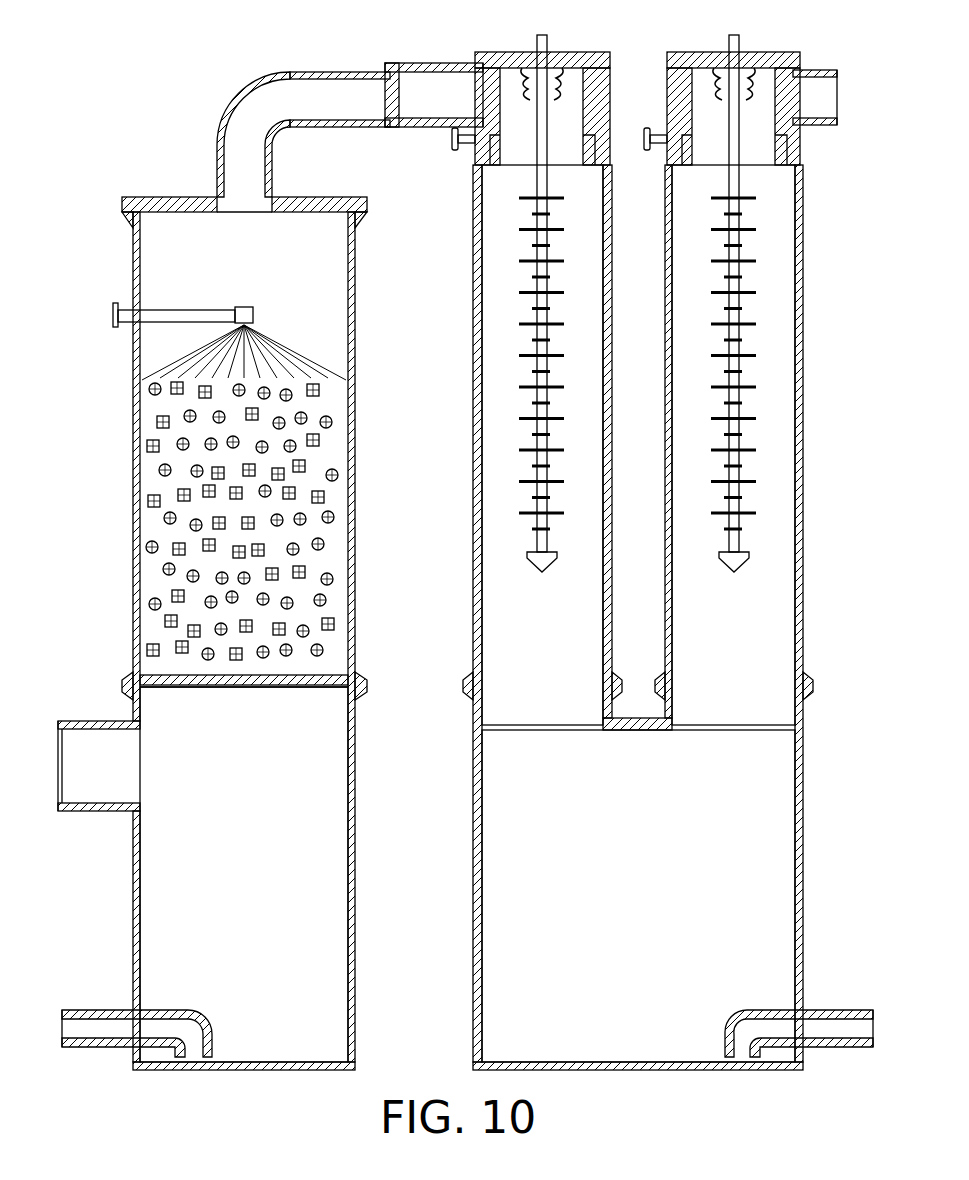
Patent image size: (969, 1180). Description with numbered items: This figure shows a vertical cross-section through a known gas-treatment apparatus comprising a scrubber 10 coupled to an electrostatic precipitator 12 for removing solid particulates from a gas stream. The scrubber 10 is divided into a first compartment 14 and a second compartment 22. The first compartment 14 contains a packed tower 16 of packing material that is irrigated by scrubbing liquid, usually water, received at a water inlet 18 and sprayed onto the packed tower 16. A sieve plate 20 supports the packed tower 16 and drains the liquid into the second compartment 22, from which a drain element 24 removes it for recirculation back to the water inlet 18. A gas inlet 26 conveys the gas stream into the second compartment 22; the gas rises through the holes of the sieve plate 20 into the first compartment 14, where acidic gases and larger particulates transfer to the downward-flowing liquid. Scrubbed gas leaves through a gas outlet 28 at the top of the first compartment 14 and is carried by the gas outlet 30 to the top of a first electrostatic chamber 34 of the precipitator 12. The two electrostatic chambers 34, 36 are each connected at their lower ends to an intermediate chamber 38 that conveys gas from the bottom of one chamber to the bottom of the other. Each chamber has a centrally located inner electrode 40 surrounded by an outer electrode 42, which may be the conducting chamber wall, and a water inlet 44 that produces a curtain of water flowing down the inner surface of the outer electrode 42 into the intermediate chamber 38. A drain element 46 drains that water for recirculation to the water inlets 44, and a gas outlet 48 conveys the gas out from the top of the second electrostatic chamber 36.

The scrubber 10 is at (95, 516).
The electrostatic precipitator 12 is at (822, 318).
The first compartment 14 is at (133, 425).
The packed tower 16 is at (322, 508).
The water inlet 18 is at (113, 316).
The sieve plate 20 is at (305, 688).
The second compartment 22 is at (357, 820).
The drain element 24 is at (92, 1010).
The gas inlet 26 is at (90, 812).
The gas outlet 28 is at (217, 152).
The gas outlet 30 is at (455, 60).
The electrostatic chamber 34 is at (542, 445).
The electrostatic chamber 36 is at (733, 445).
The intermediate chamber 38 is at (638, 896).
The inner electrode 40 is at (537, 462).
The outer electrode 42 is at (482, 512).
The water inlet 44 is at (455, 152).
The drain element 46 is at (842, 1010).
The gas outlet 48 is at (825, 68).